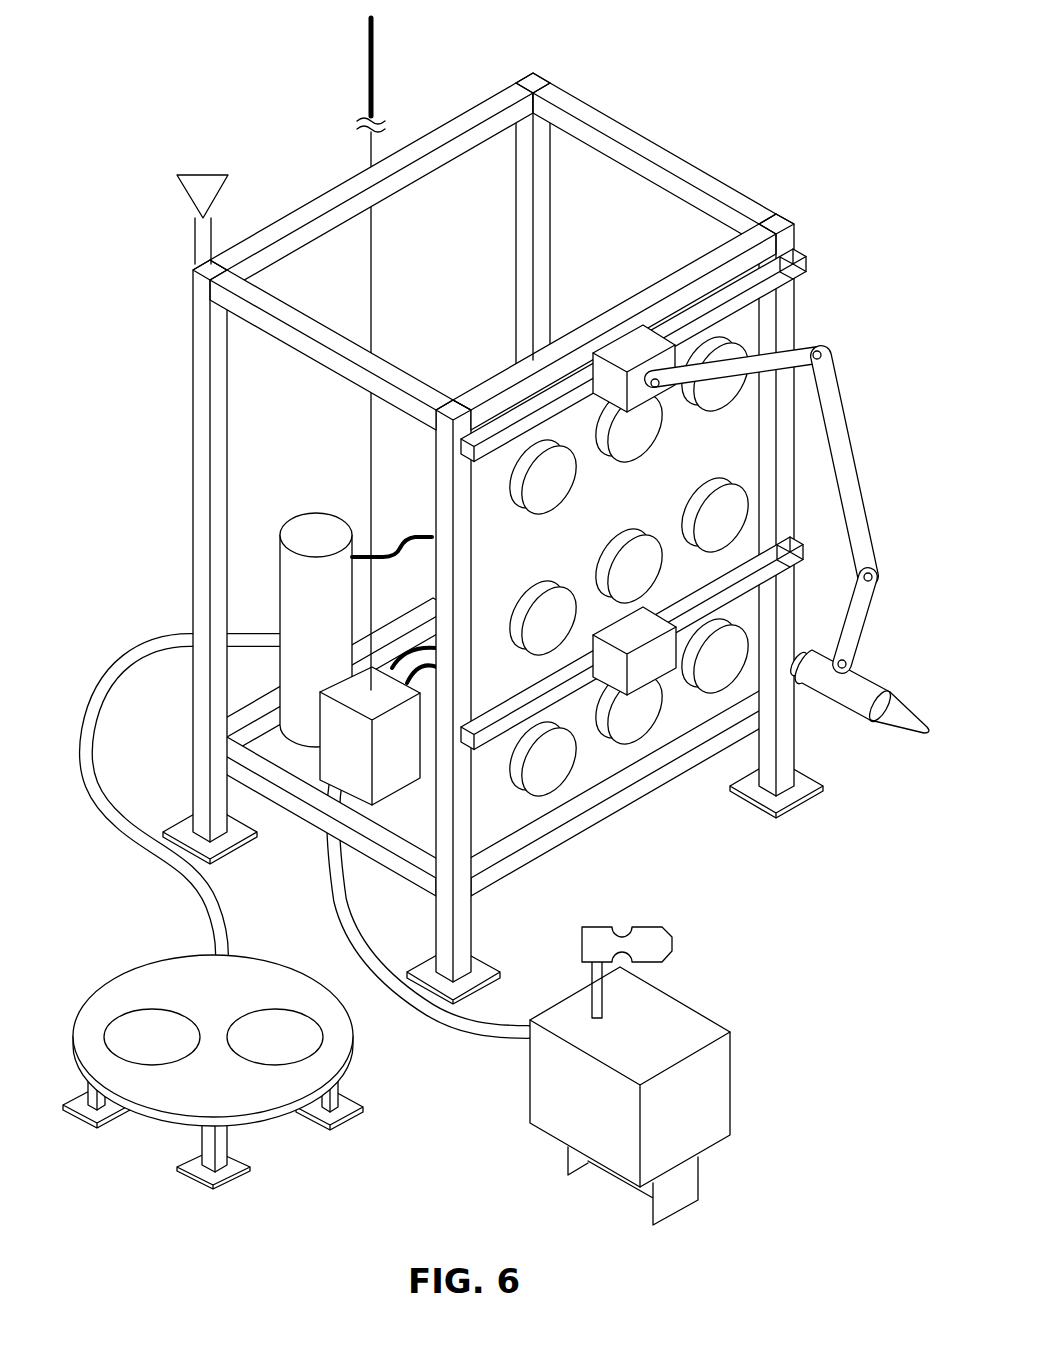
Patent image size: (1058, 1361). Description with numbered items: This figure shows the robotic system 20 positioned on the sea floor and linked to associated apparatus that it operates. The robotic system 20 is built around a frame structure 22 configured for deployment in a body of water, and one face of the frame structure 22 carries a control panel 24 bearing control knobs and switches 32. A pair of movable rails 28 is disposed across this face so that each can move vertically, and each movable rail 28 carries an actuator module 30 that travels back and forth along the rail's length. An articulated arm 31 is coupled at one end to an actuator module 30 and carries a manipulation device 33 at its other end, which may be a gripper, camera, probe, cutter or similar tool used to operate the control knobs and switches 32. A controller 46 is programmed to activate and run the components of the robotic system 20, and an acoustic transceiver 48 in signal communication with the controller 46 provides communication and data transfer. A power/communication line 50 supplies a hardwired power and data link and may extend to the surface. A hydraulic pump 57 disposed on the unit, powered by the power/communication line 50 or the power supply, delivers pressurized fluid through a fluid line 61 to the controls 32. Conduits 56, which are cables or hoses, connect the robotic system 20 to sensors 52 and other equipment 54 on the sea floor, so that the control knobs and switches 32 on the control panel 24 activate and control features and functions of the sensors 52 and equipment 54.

The robotic system 20 is at (665, 48).
The frame structure 22 is at (493, 511).
The control panel 24 is at (629, 597).
The movable rail 28 is at (490, 742).
The actuator module 30 is at (657, 668).
The articulated arm 31 is at (843, 452).
The control knobs and switches 32 is at (560, 483).
The manipulation device 33 is at (868, 670).
The controller 46 is at (327, 762).
The acoustic transceiver 48 is at (187, 192).
The power/communication line 50 is at (368, 55).
The sensors 52 is at (692, 1033).
The other equipment 54 is at (140, 985).
The conduits 56 is at (118, 657).
The hydraulic pump 57 is at (302, 518).
The fluid line 61 is at (428, 537).